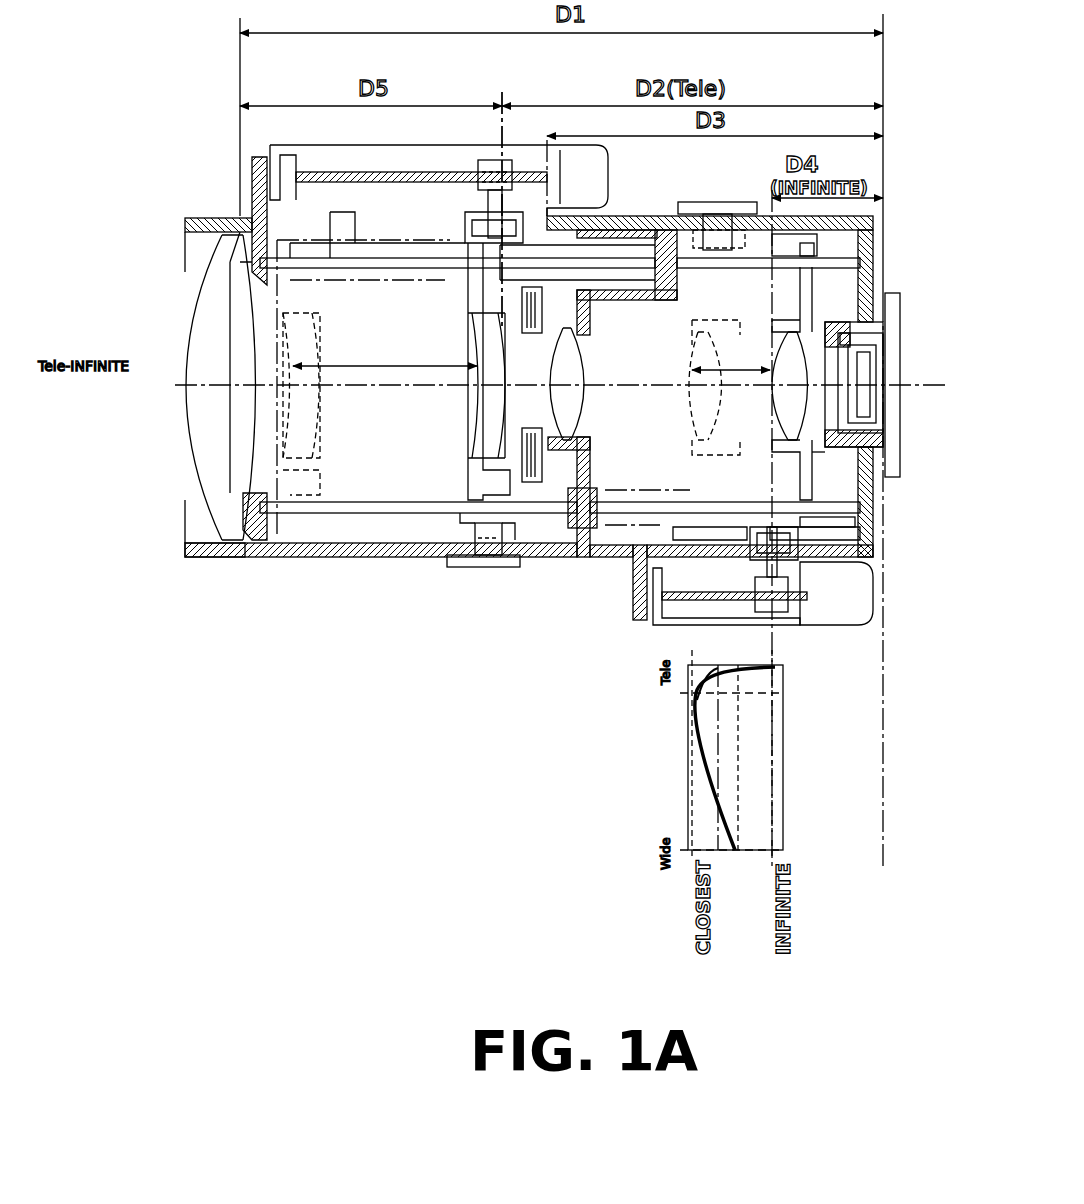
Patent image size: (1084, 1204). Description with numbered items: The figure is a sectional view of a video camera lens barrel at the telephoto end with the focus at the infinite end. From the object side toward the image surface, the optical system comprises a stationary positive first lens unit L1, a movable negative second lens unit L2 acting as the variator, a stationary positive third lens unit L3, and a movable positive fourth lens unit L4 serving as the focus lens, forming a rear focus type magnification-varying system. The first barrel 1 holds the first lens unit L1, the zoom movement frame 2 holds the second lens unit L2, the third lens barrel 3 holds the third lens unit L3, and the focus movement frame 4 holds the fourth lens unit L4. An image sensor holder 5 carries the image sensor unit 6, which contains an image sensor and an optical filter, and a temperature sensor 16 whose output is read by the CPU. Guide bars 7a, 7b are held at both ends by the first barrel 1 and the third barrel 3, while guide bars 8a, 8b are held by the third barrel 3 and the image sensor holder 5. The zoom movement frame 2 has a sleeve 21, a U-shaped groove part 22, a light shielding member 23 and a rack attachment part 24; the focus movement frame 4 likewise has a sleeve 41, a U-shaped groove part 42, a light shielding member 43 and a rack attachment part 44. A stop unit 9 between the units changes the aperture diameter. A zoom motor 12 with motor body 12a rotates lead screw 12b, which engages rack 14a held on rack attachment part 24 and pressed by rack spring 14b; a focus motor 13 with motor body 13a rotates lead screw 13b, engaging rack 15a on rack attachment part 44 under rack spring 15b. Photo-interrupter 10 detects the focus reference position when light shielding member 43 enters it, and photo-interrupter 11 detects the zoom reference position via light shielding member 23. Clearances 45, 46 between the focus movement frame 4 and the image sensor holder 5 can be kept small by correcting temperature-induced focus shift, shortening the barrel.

The first barrel 1 is at (208, 218).
The zoom movement frame 2 is at (485, 290).
The third lens barrel 3 is at (615, 300).
The focus movement frame 4 is at (810, 293).
The image sensor holder 5 is at (872, 238).
The image sensor unit 6 is at (875, 345).
The guide bar 7a is at (357, 268).
The guide bar 7b is at (355, 503).
The guide bar 8a is at (646, 503).
The guide bar 8b is at (698, 268).
The stop unit 9 is at (540, 460).
The photo-interrupter 10 is at (718, 222).
The photo-interrupter 11 is at (481, 545).
The zoom motor 12 is at (423, 145).
The motor body 12a is at (610, 178).
The lead screw 12b is at (340, 172).
The focus motor 13 is at (808, 627).
The motor body 13a is at (873, 605).
The lead screw 13b is at (683, 600).
The rack 14a is at (493, 160).
The rack spring 14b is at (505, 210).
The rack 15a is at (778, 610).
The rack spring 15b is at (787, 557).
The temperature sensor 16 is at (845, 340).
The sleeve 21 is at (468, 244).
The U-shaped groove part 22 is at (467, 520).
The light shielding member 23 is at (508, 528).
The rack attachment part 24 is at (470, 210).
The sleeve 41 is at (845, 540).
The U-shaped groove part 42 is at (808, 247).
The light shielding member 43 is at (782, 238).
The rack attachment part 44 is at (748, 562).
The clearance 45 is at (817, 457).
The clearance 46 is at (822, 520).
The first lens unit L1 is at (228, 530).
The second lens unit L2 is at (485, 437).
The third lens unit L3 is at (572, 418).
The fourth lens unit L4 is at (790, 410).